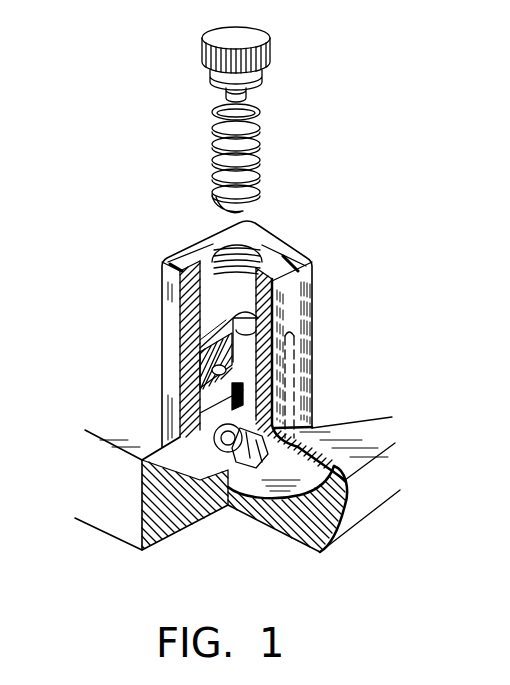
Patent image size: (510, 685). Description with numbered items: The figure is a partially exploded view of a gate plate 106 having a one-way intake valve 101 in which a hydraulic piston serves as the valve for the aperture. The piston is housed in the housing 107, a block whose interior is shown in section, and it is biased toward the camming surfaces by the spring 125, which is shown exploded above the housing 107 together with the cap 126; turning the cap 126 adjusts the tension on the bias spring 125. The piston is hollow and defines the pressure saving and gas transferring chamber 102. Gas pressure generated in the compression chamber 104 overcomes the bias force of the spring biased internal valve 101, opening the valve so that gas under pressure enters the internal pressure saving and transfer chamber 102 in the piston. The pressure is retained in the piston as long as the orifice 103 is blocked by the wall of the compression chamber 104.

The one-way intake valve 101 is at (305, 432).
The pressure saving and gas transferring chamber 102 is at (282, 392).
The orifice 103 is at (204, 384).
The compression chamber 104 is at (288, 485).
The gate plate 106 is at (258, 325).
The housing 107 is at (287, 245).
The spring 125 is at (268, 120).
The cap 126 is at (268, 25).